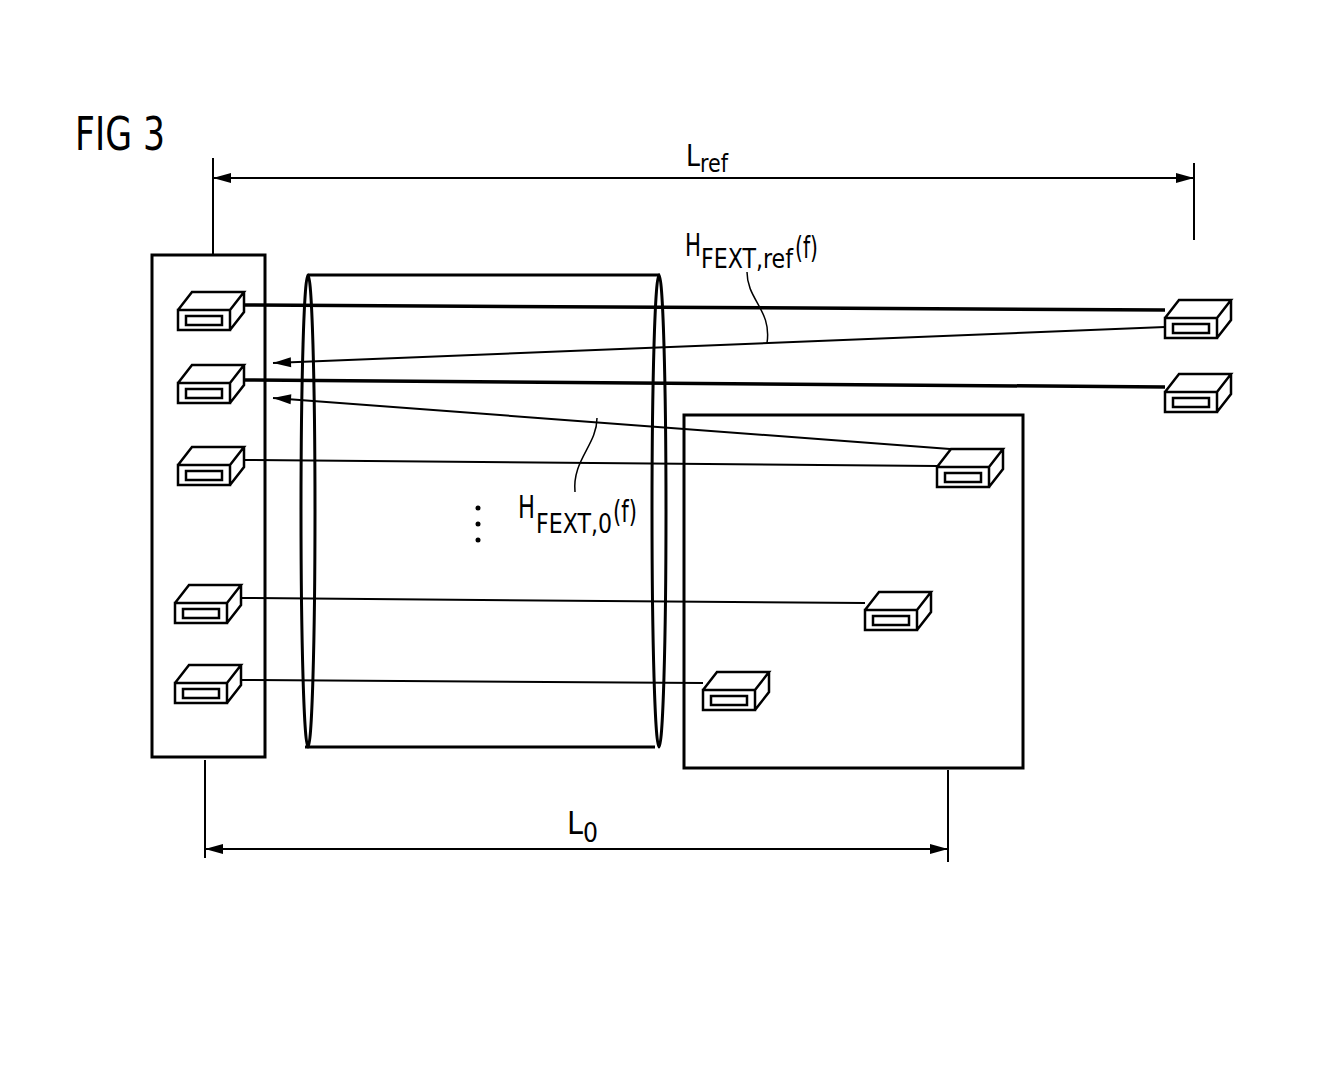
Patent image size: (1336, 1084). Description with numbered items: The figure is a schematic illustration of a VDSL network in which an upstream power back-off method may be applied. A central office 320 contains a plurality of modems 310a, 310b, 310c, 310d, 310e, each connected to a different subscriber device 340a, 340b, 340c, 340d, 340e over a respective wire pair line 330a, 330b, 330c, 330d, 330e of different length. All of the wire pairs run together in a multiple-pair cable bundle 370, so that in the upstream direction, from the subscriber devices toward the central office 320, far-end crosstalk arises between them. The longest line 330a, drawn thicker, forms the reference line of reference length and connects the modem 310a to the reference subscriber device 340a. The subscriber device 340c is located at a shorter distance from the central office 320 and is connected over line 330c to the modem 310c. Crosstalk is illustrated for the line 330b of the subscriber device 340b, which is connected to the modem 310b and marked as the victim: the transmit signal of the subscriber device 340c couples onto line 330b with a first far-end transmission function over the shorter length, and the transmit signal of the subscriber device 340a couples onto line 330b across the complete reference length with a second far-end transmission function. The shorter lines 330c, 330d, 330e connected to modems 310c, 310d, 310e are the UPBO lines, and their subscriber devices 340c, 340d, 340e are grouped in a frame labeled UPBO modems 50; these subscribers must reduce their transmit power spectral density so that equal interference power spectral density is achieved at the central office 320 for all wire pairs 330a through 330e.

The modem 310a is at (178, 322).
The modem 310b is at (178, 394).
The modem 310c is at (178, 474).
The modem 310d is at (175, 612).
The modem 310e is at (175, 694).
The central office 320 is at (152, 540).
The wire pair line 330a is at (895, 305).
The wire pair line 330b is at (878, 385).
The wire pair line 330c is at (393, 465).
The wire pair line 330d is at (375, 602).
The wire pair line 330e is at (515, 678).
The subscriber device 340a is at (1220, 322).
The subscriber device 340b is at (1220, 395).
The subscriber device 340c is at (1002, 468).
The subscriber device 340d is at (928, 613).
The subscriber device 340e is at (758, 692).
The multiple-pair cable bundle 370 is at (483, 274).
The UPBO modems 50 is at (1023, 667).